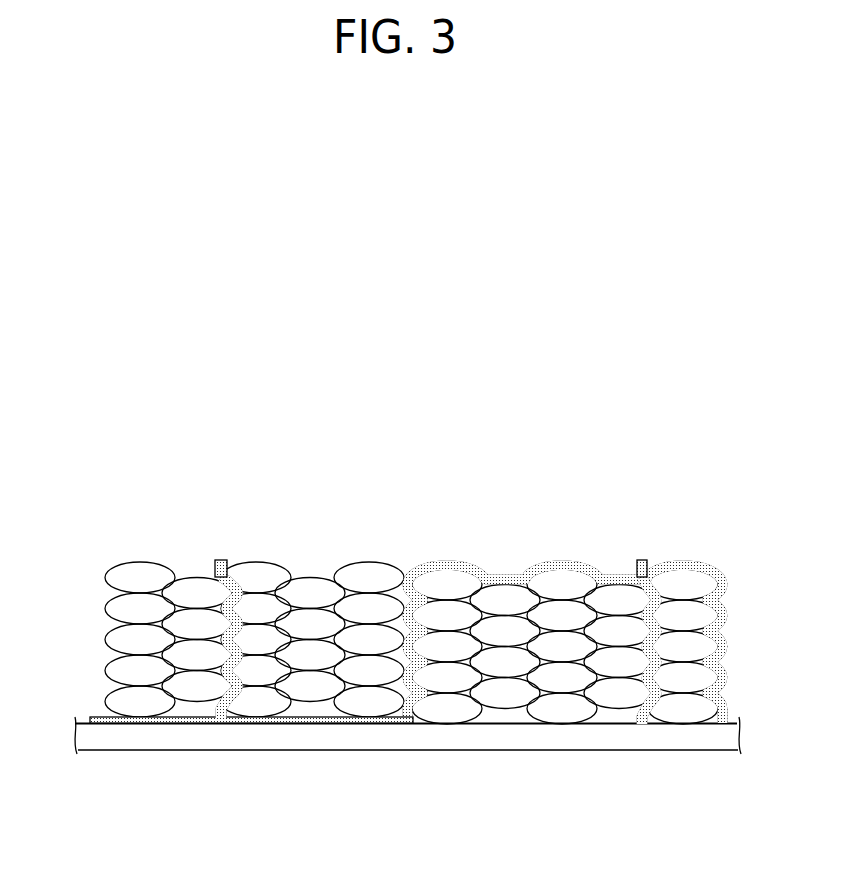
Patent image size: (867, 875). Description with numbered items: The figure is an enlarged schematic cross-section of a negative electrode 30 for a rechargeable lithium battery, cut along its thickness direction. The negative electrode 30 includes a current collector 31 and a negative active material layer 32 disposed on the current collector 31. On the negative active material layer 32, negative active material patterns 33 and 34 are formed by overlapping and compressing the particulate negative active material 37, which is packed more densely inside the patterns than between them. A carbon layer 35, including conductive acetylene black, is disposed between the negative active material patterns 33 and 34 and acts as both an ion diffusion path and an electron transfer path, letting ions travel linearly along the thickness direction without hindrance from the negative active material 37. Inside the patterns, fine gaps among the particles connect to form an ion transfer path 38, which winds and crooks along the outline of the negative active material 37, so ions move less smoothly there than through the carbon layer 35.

The negative electrode 30 is at (123, 428).
The current collector 31 is at (728, 738).
The negative active material layer 32 is at (50, 562).
The negative active material pattern 33 is at (717, 497).
The negative active material pattern 34 is at (407, 497).
The carbon layer 35 is at (98, 717).
The negative active material 37 is at (118, 604).
The ion transfer path 38 is at (222, 550).